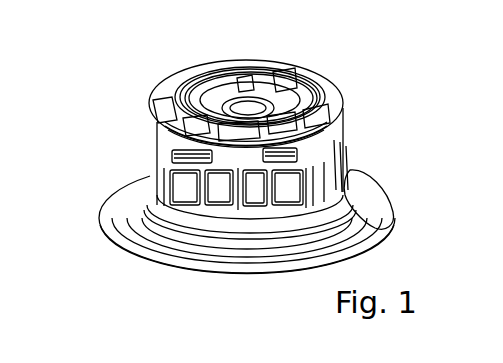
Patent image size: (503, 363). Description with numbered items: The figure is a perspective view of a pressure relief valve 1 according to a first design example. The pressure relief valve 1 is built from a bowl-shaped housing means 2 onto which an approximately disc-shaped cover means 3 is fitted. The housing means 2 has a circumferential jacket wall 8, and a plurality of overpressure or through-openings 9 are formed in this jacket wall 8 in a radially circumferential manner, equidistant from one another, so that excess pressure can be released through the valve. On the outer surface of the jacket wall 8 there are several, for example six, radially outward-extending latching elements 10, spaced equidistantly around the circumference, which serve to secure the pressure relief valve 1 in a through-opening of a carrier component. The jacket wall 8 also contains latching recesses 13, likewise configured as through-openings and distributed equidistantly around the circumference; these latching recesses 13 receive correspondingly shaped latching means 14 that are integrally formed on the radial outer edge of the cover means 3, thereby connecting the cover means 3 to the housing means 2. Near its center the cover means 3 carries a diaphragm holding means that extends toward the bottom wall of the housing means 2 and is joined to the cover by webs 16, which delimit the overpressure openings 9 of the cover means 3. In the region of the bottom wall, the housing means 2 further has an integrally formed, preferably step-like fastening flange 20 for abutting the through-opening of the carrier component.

The pressure relief valve 1 is at (140, 40).
The housing means 2 is at (352, 206).
The cover means 3 is at (215, 106).
The jacket wall 8 is at (237, 200).
The overpressure openings 9 is at (273, 88).
The latching elements 10 is at (155, 178).
The latching recesses 13 is at (295, 114).
The latching means 14 is at (300, 146).
The webs 16 is at (250, 76).
The fastening flange 20 is at (350, 242).